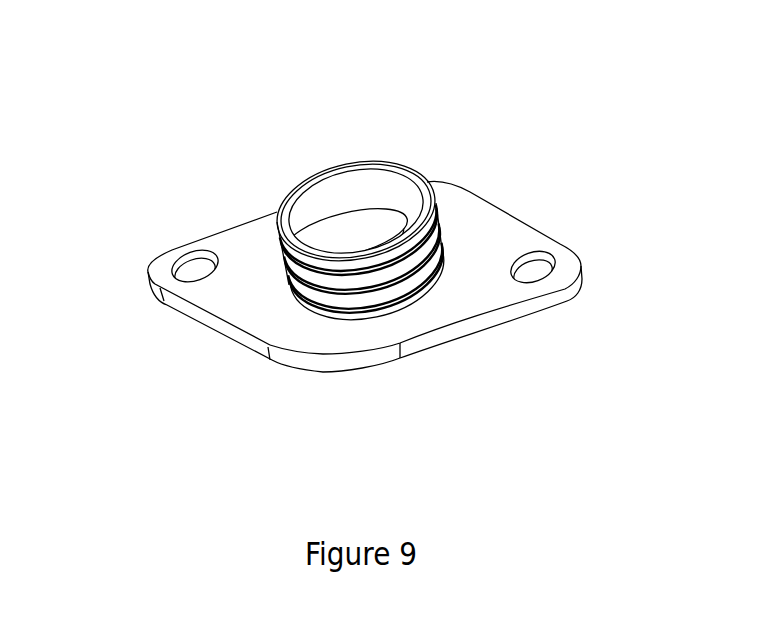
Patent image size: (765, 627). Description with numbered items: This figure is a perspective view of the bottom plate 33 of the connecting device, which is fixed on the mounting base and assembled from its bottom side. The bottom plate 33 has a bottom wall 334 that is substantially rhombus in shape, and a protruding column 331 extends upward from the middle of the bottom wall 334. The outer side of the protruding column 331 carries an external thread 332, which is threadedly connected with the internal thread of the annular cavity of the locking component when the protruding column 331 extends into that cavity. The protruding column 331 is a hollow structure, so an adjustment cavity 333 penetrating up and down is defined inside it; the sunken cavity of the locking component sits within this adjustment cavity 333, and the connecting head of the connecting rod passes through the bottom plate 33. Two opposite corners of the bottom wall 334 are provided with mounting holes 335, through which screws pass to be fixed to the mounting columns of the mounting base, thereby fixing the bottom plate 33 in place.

The bottom plate 33 is at (342, 28).
The protruding column 331 is at (277, 212).
The external thread 332 is at (277, 275).
The adjustment cavity 333 is at (362, 193).
The bottom wall 334 is at (388, 320).
The mounting holes 335 is at (535, 260).